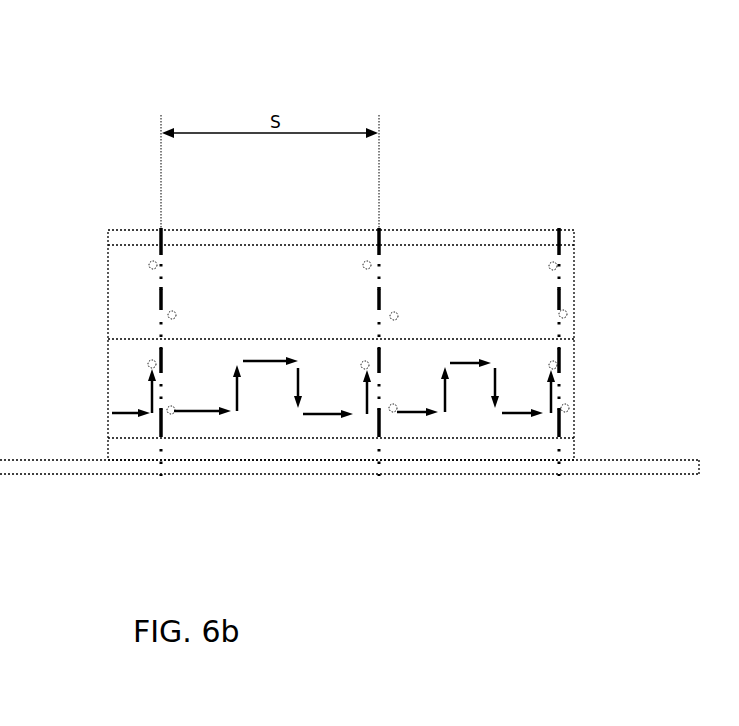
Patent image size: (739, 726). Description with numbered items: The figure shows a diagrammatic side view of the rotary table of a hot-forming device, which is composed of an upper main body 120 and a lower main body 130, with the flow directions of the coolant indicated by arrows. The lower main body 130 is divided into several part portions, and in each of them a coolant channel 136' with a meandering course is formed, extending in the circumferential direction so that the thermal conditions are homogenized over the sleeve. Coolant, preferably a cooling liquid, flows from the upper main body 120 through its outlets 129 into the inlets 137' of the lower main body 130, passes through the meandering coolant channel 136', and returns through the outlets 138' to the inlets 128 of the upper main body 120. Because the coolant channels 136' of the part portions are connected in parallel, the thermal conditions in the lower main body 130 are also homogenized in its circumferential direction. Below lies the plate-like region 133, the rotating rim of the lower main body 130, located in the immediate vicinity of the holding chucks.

The upper main body 120 is at (455, 285).
The inlets 128 is at (366, 268).
The outlets 129 is at (387, 283).
The lower main body 130 is at (523, 378).
The plate-like region 133 is at (663, 470).
The coolant channels 136' is at (379, 445).
The inlets 137' is at (364, 475).
The outlets 138' is at (382, 446).